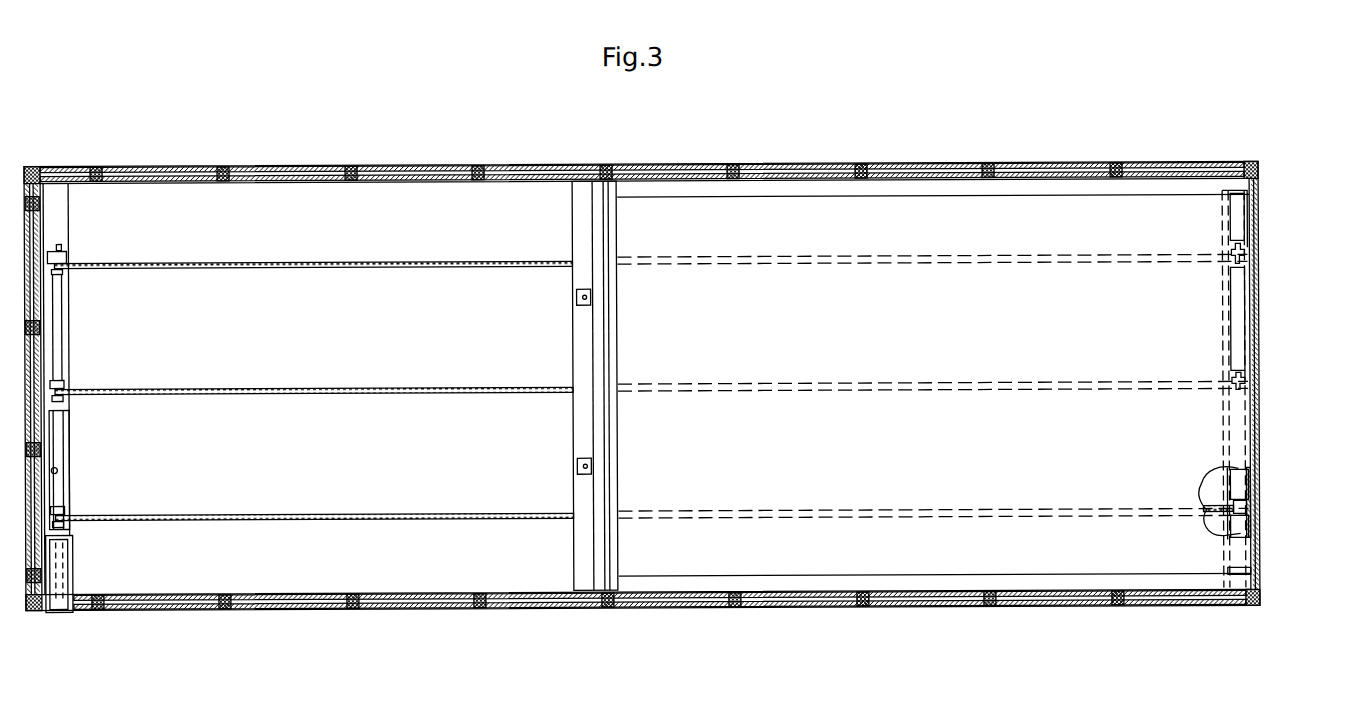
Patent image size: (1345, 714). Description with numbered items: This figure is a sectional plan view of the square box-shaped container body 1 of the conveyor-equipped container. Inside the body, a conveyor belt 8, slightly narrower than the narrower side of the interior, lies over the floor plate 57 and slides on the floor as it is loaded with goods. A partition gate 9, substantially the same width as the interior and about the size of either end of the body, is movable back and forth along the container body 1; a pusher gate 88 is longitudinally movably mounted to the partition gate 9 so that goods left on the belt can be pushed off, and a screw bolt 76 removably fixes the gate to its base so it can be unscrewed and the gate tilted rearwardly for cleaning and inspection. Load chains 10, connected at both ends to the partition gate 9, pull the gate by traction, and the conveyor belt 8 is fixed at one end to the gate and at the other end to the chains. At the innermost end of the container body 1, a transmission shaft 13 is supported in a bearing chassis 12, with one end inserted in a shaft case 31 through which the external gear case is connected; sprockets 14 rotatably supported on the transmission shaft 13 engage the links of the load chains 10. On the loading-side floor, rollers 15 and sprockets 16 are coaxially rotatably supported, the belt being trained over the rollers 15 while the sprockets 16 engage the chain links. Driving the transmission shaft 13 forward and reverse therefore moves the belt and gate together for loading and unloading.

The container body 1 is at (393, 165).
The floor plate 57 is at (530, 195).
The conveyor belt 8 is at (770, 197).
The partition gate 9 is at (588, 346).
The pusher gate 88 is at (620, 462).
The screw bolt 76 is at (578, 298).
The load chains 10 is at (350, 267).
The sprockets 14 is at (73, 268).
The bearing chassis 12 is at (66, 430).
The transmission shaft 13 is at (60, 470).
The shaft case 31 is at (63, 612).
The rollers 15 is at (1226, 236).
The sprockets 16 is at (1235, 263).